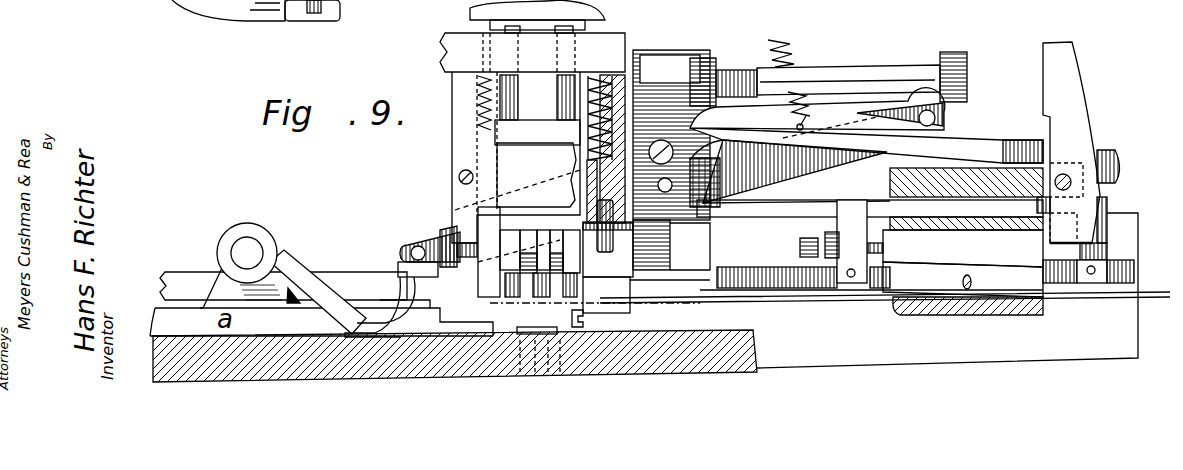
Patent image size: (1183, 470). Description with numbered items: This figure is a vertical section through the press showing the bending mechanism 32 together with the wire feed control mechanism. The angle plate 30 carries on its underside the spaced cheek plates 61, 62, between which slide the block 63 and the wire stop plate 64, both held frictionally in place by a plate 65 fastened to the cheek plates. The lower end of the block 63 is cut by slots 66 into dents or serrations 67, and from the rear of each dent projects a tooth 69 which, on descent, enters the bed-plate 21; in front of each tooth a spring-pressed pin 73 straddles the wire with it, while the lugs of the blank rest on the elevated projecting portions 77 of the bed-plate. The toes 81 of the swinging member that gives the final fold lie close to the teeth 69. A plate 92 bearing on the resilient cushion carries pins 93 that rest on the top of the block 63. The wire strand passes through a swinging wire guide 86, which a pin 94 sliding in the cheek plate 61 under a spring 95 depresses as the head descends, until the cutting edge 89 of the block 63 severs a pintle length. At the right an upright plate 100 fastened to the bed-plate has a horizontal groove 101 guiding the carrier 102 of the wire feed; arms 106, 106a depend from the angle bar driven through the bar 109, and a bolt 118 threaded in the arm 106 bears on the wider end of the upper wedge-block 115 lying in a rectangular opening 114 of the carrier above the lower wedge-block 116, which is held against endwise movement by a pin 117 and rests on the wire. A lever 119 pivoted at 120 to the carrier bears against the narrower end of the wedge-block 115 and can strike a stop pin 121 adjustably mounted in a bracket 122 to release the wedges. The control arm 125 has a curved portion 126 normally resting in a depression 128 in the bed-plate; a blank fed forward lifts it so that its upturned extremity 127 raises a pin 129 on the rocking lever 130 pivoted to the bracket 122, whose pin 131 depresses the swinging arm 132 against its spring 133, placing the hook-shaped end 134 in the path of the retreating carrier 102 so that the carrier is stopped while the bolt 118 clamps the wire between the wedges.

The bed-plate 21 is at (185, 378).
The angle plate 30 is at (455, 50).
The bending mechanism 32 is at (442, 170).
The cheek plate 61 is at (600, 72).
The cheek plate 62 is at (460, 130).
The block 63 is at (537, 132).
The wire stop plate 64 is at (487, 228).
The plate 65 is at (536, 141).
The slots 66 is at (552, 240).
The dents or serrations 67 is at (565, 245).
The tooth 69 is at (540, 296).
The pin 73 is at (585, 287).
The projecting portions 77 is at (543, 330).
The toes 81 is at (533, 257).
The swinging wire guide 86 is at (627, 305).
The cutting edge 89 is at (571, 251).
The plate 92 is at (585, 4).
The pins 93 is at (560, 100).
The pin 94 is at (690, 237).
The spring 95 is at (612, 95).
The upright plate 100 is at (830, 290).
The horizontal groove 101 is at (770, 268).
The carrier 102 is at (953, 170).
The arm 106 is at (852, 222).
The arm 106a is at (1117, 273).
The bar 109 is at (352, 275).
The rectangular opening 114 is at (1043, 290).
The upper wedge-block 115 is at (963, 242).
The lower wedge-block 116 is at (963, 279).
The pin 117 is at (962, 282).
The bolt 118 is at (818, 240).
The lever 119 is at (1075, 113).
The pivot 120 is at (1072, 183).
The stop pin 121 is at (875, 70).
The bracket 122 is at (671, 135).
The arm 125 is at (285, 245).
The curved portion 126 is at (333, 368).
The extremity 127 is at (428, 280).
The depression 128 is at (383, 345).
The pin 129 is at (418, 245).
The rocking lever 130 is at (797, 147).
The pin 131 is at (952, 115).
The swinging arm 132 is at (1008, 138).
The spring 133 is at (790, 52).
The hook-shaped end 134 is at (1112, 150).